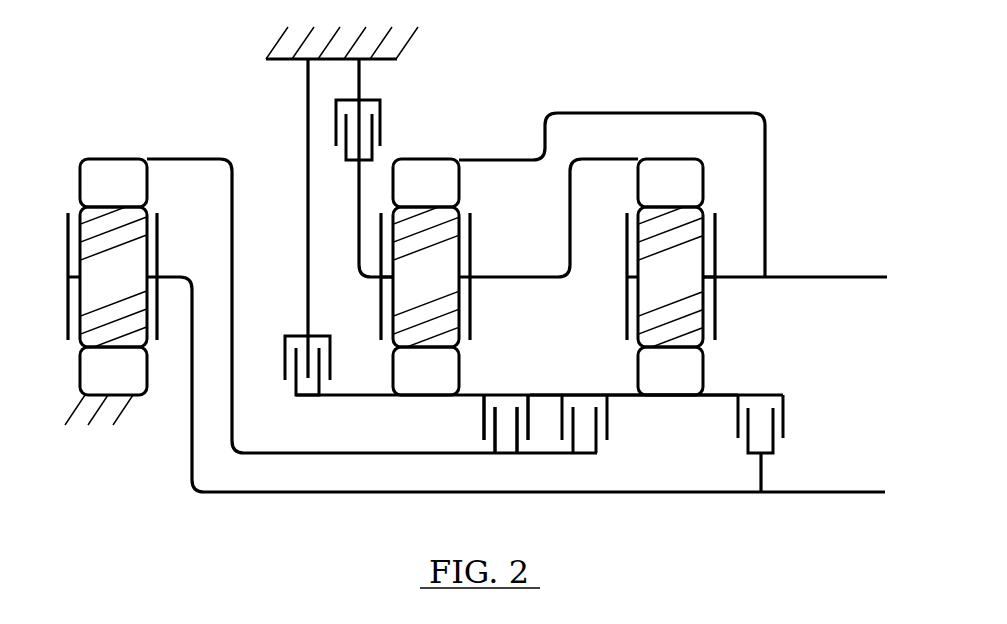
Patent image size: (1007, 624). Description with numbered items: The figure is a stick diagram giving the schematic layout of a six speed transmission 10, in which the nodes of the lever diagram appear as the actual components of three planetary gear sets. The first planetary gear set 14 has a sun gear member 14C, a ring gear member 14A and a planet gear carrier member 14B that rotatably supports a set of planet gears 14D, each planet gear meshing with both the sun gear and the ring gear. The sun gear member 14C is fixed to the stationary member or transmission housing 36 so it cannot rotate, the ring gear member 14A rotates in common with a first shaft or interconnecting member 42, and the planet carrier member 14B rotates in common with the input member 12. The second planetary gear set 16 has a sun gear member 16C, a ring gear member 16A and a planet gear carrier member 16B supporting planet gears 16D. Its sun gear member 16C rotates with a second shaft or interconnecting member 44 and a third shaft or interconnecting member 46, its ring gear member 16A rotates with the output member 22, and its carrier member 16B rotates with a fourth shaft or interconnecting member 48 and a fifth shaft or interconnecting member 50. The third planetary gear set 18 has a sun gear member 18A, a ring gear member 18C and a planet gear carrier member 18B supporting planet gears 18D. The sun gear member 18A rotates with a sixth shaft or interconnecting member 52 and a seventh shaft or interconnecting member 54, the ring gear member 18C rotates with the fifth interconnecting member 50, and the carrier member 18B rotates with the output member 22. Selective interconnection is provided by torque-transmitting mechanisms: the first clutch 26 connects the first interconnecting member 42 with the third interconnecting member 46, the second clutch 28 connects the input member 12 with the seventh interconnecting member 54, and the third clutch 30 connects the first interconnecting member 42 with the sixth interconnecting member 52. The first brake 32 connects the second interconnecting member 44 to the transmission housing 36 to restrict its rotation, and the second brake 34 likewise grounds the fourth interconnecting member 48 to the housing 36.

The six speed transmission 10 is at (778, 76).
The input member 12 is at (860, 495).
The planetary gear set 14 is at (138, 311).
The ring gear member 14A is at (110, 185).
The planet gear carrier member 14B is at (158, 247).
The sun gear member 14C is at (128, 378).
The planet gears 14D is at (135, 290).
The planetary gear set 16 is at (449, 272).
The ring gear member 16A is at (427, 187).
The planet gear carrier member 16B is at (470, 223).
The sun gear member 16C is at (430, 373).
The planet gears 16D is at (448, 290).
The planetary gear set 18 is at (713, 269).
The sun gear member 18A is at (678, 375).
The planet gear carrier member 18B is at (715, 307).
The ring gear member 18C is at (670, 173).
The planet gears 18D is at (693, 290).
The output member 22 is at (872, 283).
The first clutch 26 is at (484, 430).
The second clutch 28 is at (783, 415).
The third clutch 30 is at (607, 430).
The first brake 32 is at (285, 360).
The second brake 34 is at (380, 108).
The transmission housing 36 is at (278, 46).
The first shaft or interconnecting member 42 is at (233, 228).
The second shaft or interconnecting member 44 is at (333, 395).
The third shaft or interconnecting member 46 is at (495, 393).
The fourth shaft or interconnecting member 48 is at (359, 243).
The fifth shaft or interconnecting member 50 is at (570, 225).
The sixth shaft or interconnecting member 52 is at (615, 393).
The seventh shaft or interconnecting member 54 is at (720, 397).